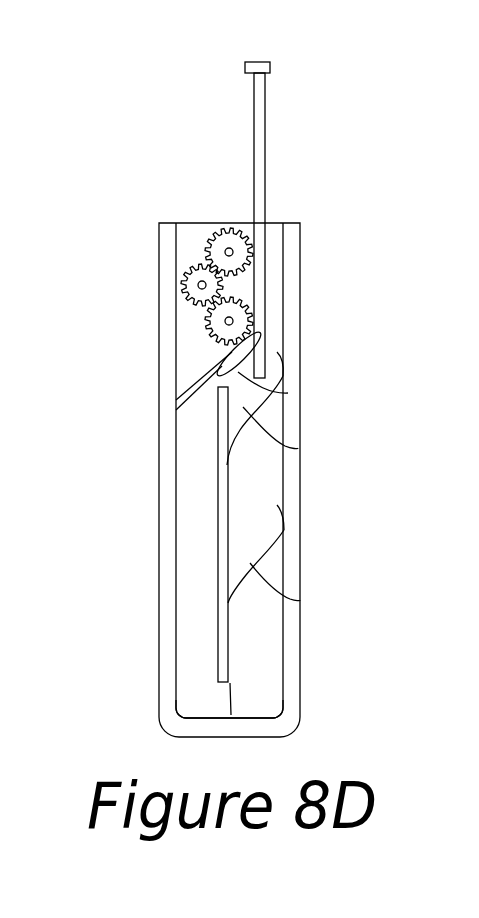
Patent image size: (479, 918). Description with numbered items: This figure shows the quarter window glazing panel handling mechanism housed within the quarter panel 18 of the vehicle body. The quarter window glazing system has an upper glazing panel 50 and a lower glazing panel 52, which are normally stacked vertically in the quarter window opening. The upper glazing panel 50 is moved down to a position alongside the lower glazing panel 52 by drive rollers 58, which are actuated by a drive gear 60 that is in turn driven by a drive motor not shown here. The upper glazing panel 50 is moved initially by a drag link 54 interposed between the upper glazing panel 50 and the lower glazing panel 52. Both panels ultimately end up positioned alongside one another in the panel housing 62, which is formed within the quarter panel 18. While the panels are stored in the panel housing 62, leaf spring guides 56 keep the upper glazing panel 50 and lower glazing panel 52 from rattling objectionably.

The quarter panel 18 is at (301, 266).
The upper glazing panel 50 is at (252, 108).
The lower glazing panel 52 is at (217, 533).
The drag link 54 is at (288, 393).
The leaf spring guides 56 is at (298, 448).
The drive rollers 58 is at (208, 242).
The drive gear 60 is at (180, 315).
The panel housing 62 is at (180, 625).